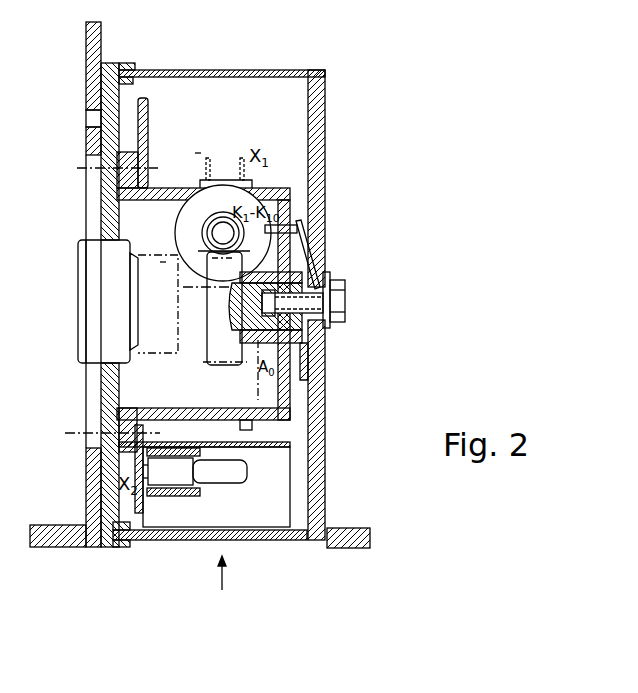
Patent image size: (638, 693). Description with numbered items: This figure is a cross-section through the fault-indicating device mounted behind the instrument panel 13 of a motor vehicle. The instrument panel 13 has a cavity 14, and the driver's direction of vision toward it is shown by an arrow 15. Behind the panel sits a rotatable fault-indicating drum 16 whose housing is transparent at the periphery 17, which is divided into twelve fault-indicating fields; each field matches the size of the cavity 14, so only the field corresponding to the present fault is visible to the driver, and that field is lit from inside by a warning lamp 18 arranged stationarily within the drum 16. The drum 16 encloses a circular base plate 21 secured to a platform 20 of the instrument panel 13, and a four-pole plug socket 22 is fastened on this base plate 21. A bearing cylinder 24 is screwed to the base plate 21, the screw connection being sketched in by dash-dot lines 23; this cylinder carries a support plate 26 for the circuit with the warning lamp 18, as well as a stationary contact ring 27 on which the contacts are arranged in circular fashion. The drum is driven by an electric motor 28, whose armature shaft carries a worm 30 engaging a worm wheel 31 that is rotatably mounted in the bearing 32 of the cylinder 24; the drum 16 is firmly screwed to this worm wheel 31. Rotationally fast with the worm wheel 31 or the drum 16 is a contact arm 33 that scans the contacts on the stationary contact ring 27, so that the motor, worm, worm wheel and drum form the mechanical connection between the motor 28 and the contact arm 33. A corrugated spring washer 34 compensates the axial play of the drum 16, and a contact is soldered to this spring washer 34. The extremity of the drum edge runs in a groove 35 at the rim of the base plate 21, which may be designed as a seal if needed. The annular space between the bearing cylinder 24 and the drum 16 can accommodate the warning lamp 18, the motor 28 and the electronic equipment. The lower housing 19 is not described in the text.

The instrument panel 13 is at (62, 545).
The cavity 14 is at (300, 538).
The arrow 15 is at (222, 590).
The fault-indicating drum 16 is at (203, 70).
The periphery 17 is at (248, 70).
The warning lamp 18 is at (242, 466).
The lower housing 19 is at (205, 515).
The platform 20 is at (92, 484).
The base plate 21 is at (107, 92).
The four-pole plug socket 22 is at (80, 270).
The dash-dot lines 23 is at (79, 170).
The bearing cylinder 24 is at (170, 188).
The support plate 26 is at (150, 107).
The contact ring 27 is at (292, 218).
The electric motor 28 is at (176, 248).
The worm 30 is at (225, 225).
The worm wheel 31 is at (218, 333).
The bearing 32 is at (320, 276).
The contact arm 33 is at (310, 250).
The corrugated spring washer 34 is at (308, 347).
The groove 35 is at (110, 547).